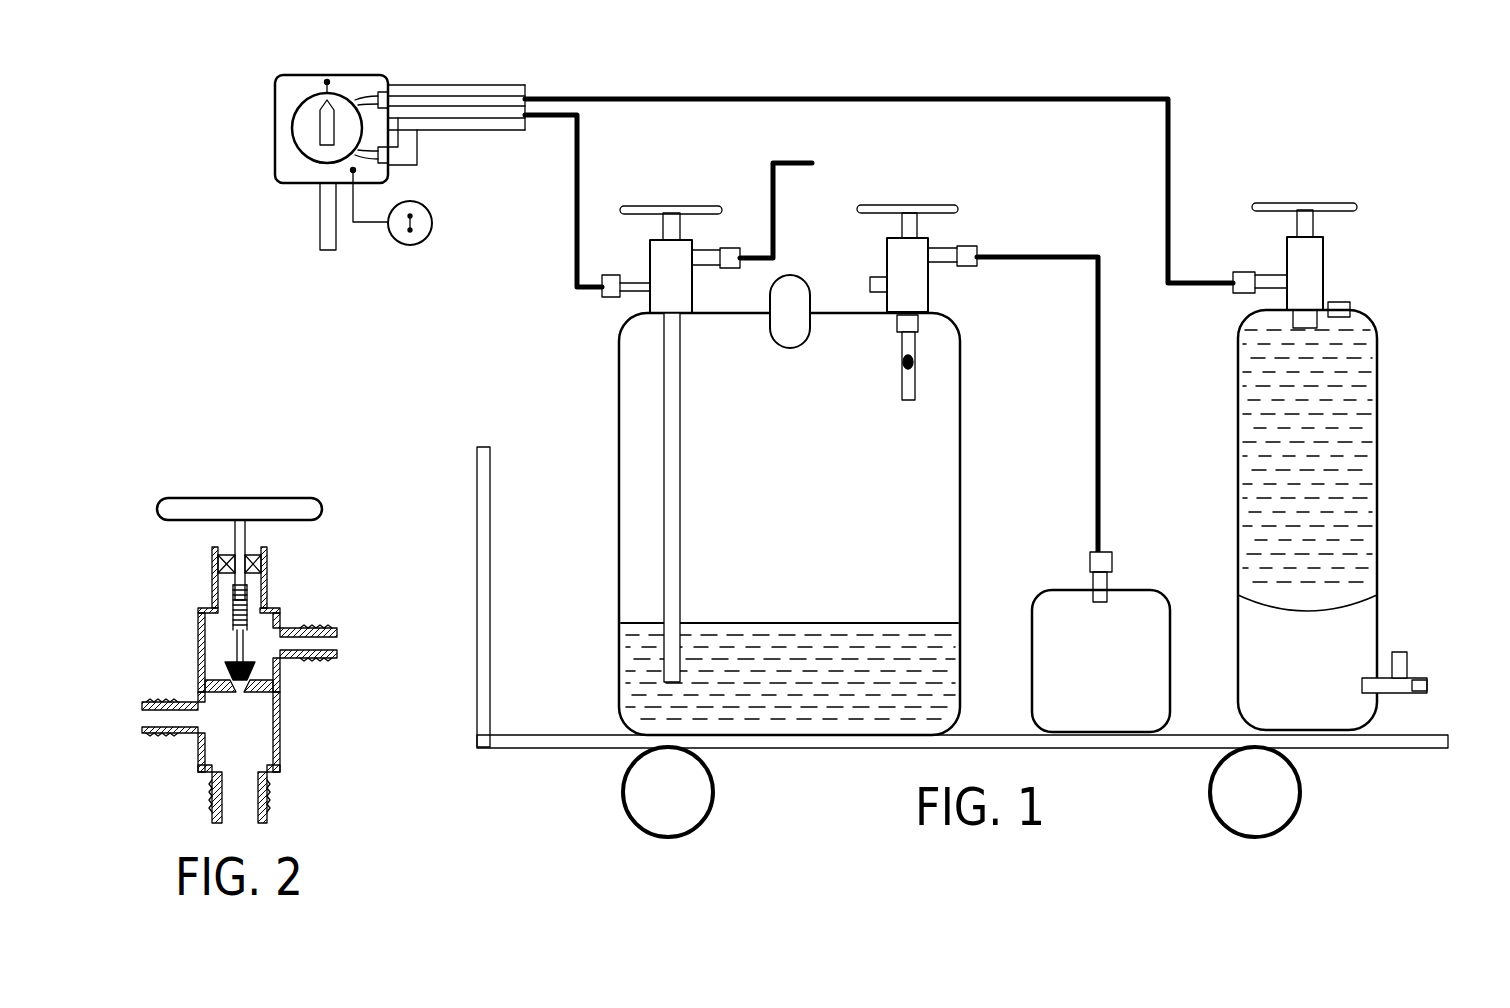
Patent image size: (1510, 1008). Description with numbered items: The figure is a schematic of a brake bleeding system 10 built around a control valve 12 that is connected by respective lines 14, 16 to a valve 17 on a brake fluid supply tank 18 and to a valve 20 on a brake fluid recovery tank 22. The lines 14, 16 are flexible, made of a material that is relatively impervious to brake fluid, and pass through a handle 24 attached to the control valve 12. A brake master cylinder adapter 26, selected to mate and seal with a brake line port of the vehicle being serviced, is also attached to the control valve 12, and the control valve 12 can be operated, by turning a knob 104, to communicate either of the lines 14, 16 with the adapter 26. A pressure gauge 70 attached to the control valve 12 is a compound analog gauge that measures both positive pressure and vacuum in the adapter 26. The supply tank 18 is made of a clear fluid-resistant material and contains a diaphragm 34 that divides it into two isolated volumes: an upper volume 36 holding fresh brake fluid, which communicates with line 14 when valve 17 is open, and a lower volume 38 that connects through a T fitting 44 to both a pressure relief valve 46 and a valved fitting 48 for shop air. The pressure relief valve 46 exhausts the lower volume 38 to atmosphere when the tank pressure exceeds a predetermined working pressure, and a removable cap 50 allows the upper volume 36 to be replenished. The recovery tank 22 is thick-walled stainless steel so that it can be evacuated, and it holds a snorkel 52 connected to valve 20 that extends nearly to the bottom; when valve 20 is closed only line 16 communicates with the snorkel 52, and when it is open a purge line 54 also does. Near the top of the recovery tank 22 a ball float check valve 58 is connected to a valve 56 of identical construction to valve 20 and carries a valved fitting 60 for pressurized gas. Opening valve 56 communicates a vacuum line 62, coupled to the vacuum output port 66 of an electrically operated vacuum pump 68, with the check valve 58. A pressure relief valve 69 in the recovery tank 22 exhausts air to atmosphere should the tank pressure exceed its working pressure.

In FIG. 1, the brake bleeding system 10 is at (1282, 90).
In FIG. 1, the control valve 12 is at (300, 80).
In FIG. 1, the knob 104 is at (318, 133).
In FIG. 1, the line 14 is at (597, 95).
In FIG. 1, the line 16 is at (578, 172).
In FIG. 2, the line 16 is at (163, 742).
In FIG. 1, the valve 17 is at (1295, 265).
In FIG. 1, the brake fluid supply tank 18 is at (1378, 450).
In FIG. 1, the valve 20 is at (680, 259).
In FIG. 2, the valve 20 is at (325, 565).
In FIG. 1, the brake fluid recovery tank 22 is at (789, 524).
In FIG. 1, the handle 24 is at (472, 86).
In FIG. 1, the brake master cylinder adapter 26 is at (320, 218).
In FIG. 1, the diaphragm 34 is at (1308, 612).
In FIG. 1, the upper volume 36 is at (1380, 368).
In FIG. 1, the lower volume 38 is at (1305, 689).
In FIG. 1, the T fitting 44 is at (1398, 690).
In FIG. 1, the pressure relief valve 46 is at (1398, 652).
In FIG. 1, the valved fitting 48 is at (1427, 685).
In FIG. 1, the removable cap 50 is at (1342, 300).
In FIG. 1, the snorkel 52 is at (680, 560).
In FIG. 2, the snorkel 52 is at (270, 808).
In FIG. 1, the purge line 54 is at (792, 160).
In FIG. 2, the purge line 54 is at (330, 665).
In FIG. 1, the valve 56 is at (917, 258).
In FIG. 1, the ball float check valve 58 is at (908, 392).
In FIG. 1, the valved fitting 60 is at (870, 284).
In FIG. 1, the vacuum line 62 is at (1025, 254).
In FIG. 1, the vacuum output port 66 is at (1110, 560).
In FIG. 1, the vacuum pump 68 is at (1101, 661).
In FIG. 1, the pressure relief valve 69 is at (790, 311).
In FIG. 1, the pressure gauge 70 is at (426, 240).